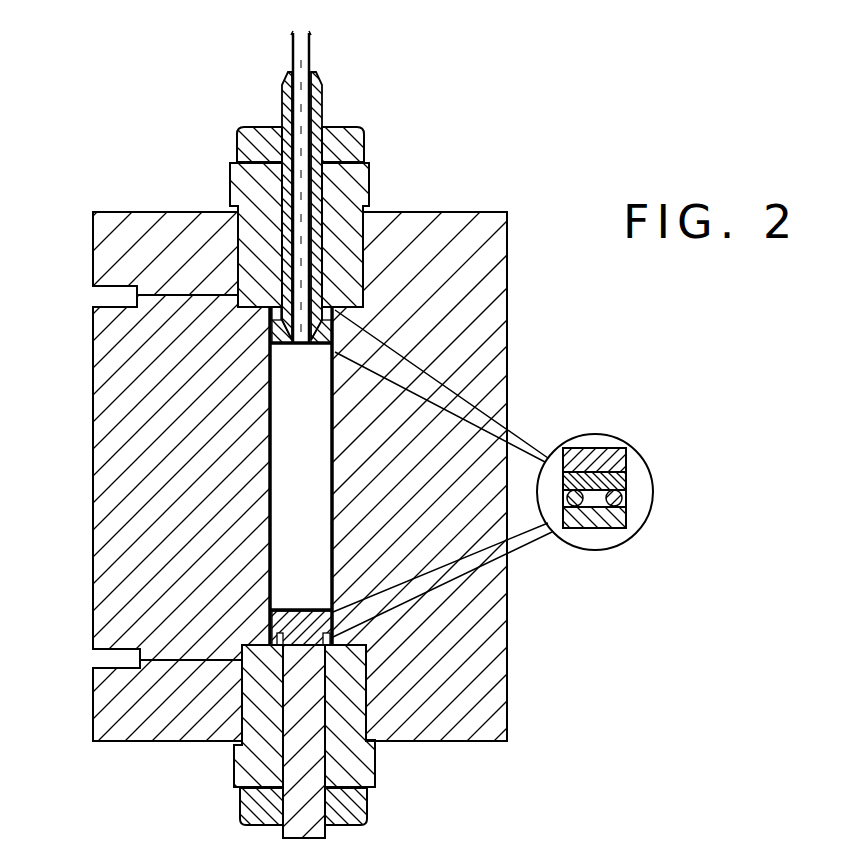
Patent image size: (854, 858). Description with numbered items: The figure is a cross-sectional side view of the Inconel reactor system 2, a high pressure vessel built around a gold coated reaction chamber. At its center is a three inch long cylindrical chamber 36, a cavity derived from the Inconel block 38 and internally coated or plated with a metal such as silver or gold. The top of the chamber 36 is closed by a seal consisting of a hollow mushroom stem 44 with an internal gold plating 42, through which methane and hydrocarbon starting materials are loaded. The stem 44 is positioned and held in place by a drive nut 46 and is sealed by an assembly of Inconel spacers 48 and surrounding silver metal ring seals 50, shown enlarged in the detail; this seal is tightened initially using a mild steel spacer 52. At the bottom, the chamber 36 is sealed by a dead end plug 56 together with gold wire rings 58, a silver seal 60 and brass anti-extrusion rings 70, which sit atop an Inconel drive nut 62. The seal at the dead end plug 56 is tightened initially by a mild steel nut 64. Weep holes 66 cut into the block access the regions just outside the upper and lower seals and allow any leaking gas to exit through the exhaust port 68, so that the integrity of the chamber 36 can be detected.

The reactor system 2 is at (497, 683).
The cylindrical chamber 36 is at (284, 452).
The Inconel block 38 is at (490, 720).
The internal gold plating 42 is at (322, 103).
The hollow mushroom stem 44 is at (318, 77).
The drive nut 46 is at (370, 187).
The Inconel 718 spacers 48 is at (620, 449).
The metal ring seals 50 is at (627, 480).
The mild steel spacer 52 is at (364, 147).
The dead end plug 56 is at (295, 727).
The Au wire rings 58 is at (622, 496).
The silver seal 60 is at (594, 481).
The Inconel 718 drive nut 62 is at (358, 765).
The mild steel nut 64 is at (356, 807).
The weep holes 66 is at (191, 297).
The exhaust port 68 is at (102, 296).
The brass anti-extrusion rings 70 is at (556, 472).